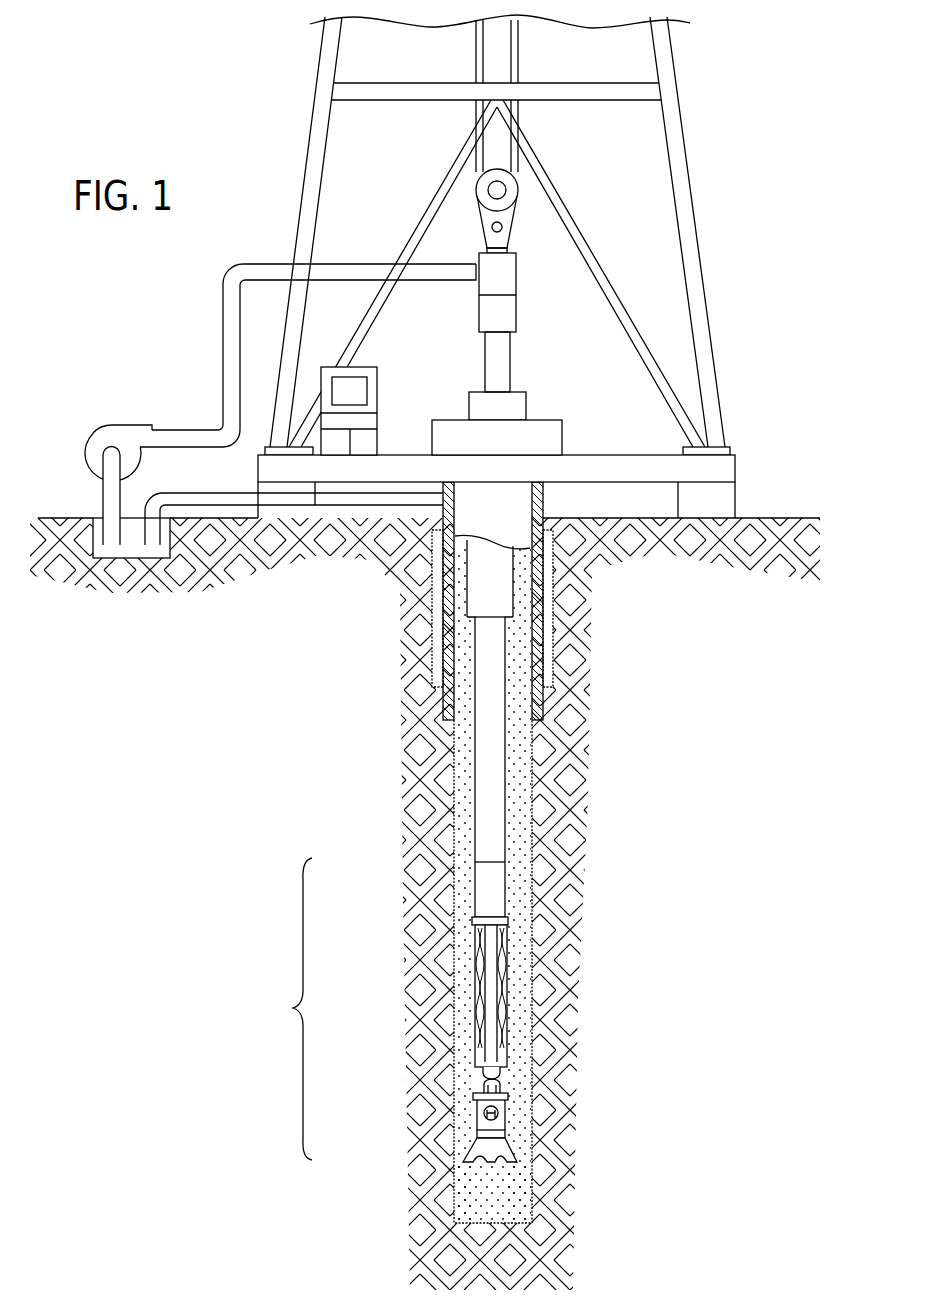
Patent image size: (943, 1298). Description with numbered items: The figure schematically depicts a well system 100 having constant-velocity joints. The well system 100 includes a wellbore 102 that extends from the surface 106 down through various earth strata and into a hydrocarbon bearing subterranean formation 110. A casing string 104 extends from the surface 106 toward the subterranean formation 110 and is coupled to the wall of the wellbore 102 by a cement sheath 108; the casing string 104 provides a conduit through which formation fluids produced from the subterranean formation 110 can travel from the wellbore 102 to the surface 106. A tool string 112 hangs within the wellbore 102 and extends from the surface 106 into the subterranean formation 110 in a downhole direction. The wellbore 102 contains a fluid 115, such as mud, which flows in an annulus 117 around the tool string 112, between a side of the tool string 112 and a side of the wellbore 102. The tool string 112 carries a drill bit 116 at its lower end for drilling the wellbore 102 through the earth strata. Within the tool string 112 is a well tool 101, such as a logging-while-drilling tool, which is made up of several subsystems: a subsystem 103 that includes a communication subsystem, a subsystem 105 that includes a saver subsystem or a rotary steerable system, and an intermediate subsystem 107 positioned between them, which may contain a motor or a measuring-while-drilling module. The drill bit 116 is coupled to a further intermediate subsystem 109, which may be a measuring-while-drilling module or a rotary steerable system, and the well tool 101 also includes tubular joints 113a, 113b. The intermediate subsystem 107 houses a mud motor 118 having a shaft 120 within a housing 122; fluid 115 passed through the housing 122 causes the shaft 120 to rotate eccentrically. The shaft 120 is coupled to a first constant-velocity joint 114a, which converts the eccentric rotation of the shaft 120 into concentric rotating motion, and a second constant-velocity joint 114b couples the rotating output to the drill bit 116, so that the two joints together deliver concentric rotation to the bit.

The well system 100 is at (722, 78).
The well tool 101 is at (287, 1009).
The wellbore 102 is at (541, 722).
The subsystem 103 is at (483, 890).
The casing string 104 is at (445, 658).
The subsystem 105 is at (477, 1100).
The surface 106 is at (530, 421).
The intermediate subsystem 107 is at (472, 965).
The cement sheath 108 is at (418, 627).
The intermediate subsystem 109 is at (477, 1138).
The subterranean formation 110 is at (374, 733).
The tool string 112 is at (513, 600).
The tubular joint 113a is at (508, 920).
The tubular joint 113b is at (478, 1070).
The first constant-velocity joint 114a is at (526, 1073).
The second constant-velocity joint 114b is at (522, 1108).
The fluid 115 is at (455, 797).
The drill bit 116 is at (463, 1148).
The annulus 117 is at (462, 1023).
The mud motor 118 is at (528, 965).
The shaft 120 is at (503, 1048).
The housing 122 is at (507, 1020).